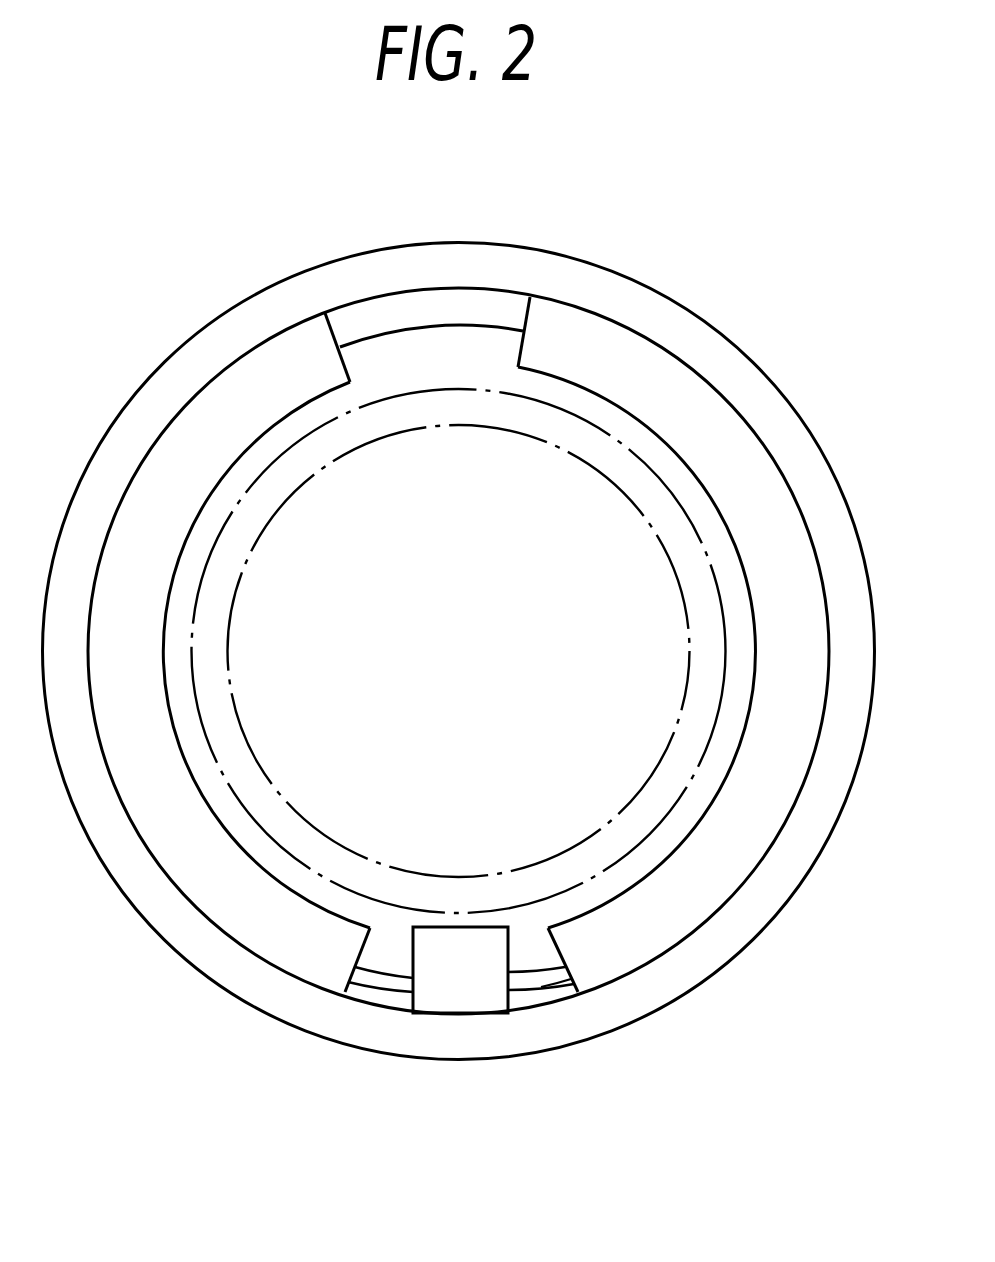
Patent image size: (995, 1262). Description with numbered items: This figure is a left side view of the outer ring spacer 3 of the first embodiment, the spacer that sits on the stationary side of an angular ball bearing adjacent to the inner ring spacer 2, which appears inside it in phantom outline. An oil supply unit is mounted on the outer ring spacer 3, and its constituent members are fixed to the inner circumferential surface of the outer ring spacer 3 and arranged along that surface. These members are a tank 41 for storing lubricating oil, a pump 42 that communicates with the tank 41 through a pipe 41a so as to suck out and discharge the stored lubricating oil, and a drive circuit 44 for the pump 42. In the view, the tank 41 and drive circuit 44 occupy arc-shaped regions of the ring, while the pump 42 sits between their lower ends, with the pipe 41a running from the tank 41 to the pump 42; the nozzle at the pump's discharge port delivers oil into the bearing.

The inner ring spacer 2 is at (348, 447).
The outer ring spacer 3 is at (688, 325).
The tank 41 is at (672, 917).
The pipe 41a is at (542, 987).
The pump 42 is at (453, 988).
The drive circuit 44 is at (248, 915).